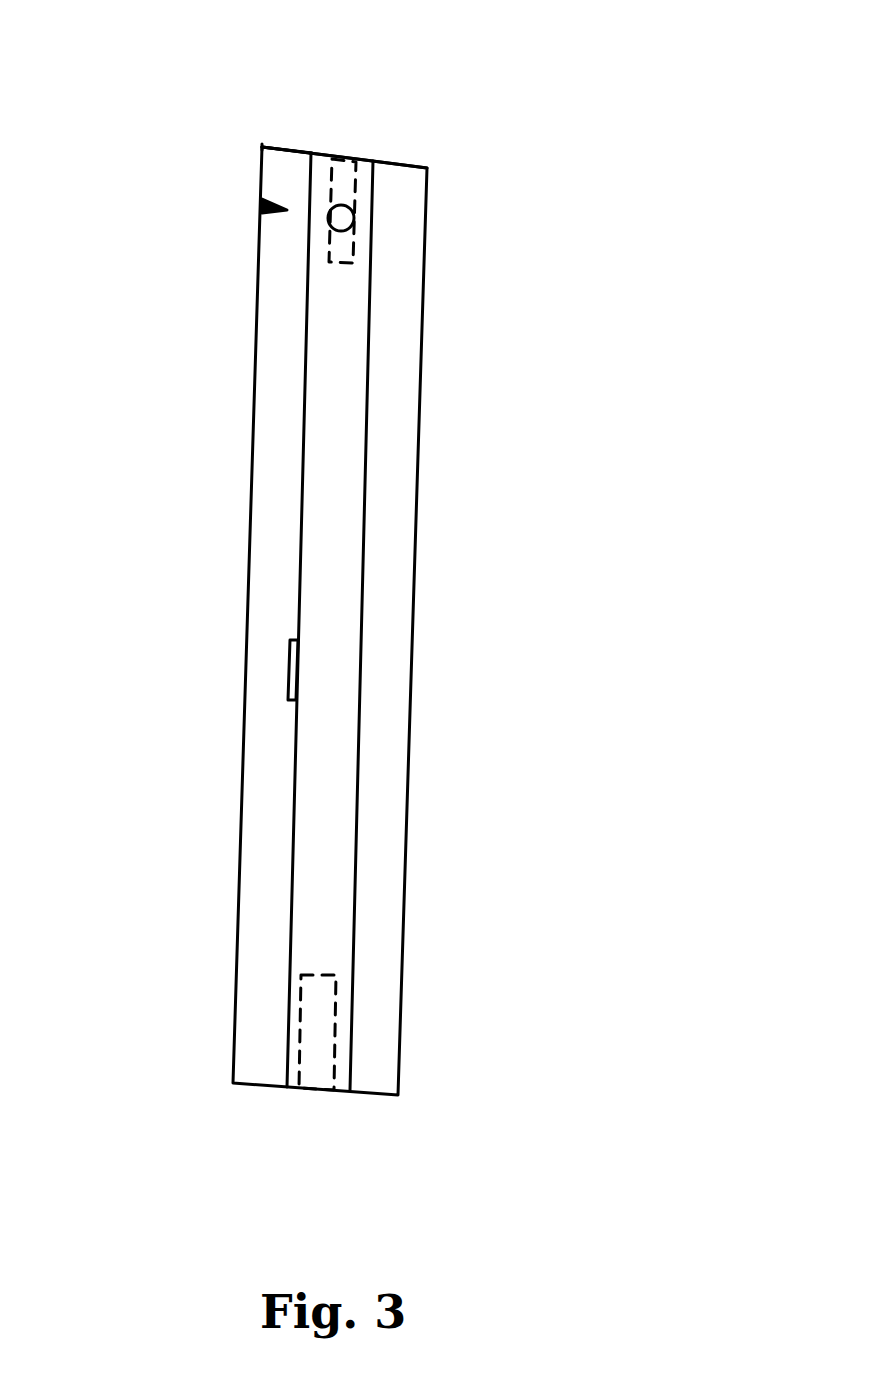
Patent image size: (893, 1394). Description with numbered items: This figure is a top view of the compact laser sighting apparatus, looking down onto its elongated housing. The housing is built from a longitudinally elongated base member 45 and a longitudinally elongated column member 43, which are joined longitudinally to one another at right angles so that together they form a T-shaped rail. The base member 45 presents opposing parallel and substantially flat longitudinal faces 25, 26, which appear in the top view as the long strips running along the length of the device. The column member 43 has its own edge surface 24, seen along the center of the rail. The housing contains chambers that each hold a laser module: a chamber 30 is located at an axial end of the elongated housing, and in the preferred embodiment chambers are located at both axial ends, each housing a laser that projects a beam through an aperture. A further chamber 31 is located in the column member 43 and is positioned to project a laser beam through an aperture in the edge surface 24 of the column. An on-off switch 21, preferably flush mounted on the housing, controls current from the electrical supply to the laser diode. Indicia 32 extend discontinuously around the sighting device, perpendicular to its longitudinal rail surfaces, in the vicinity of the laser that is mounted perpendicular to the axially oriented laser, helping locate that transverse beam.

The on-off switch 21 is at (288, 672).
The edge surface 24 is at (353, 541).
The longitudinal face 25 is at (272, 555).
The longitudinal face 26 is at (383, 837).
The chamber 30 is at (320, 238).
The chamber 31 is at (355, 225).
The indicia 32 is at (268, 205).
The column member 43 is at (357, 158).
The base member 45 is at (295, 150).